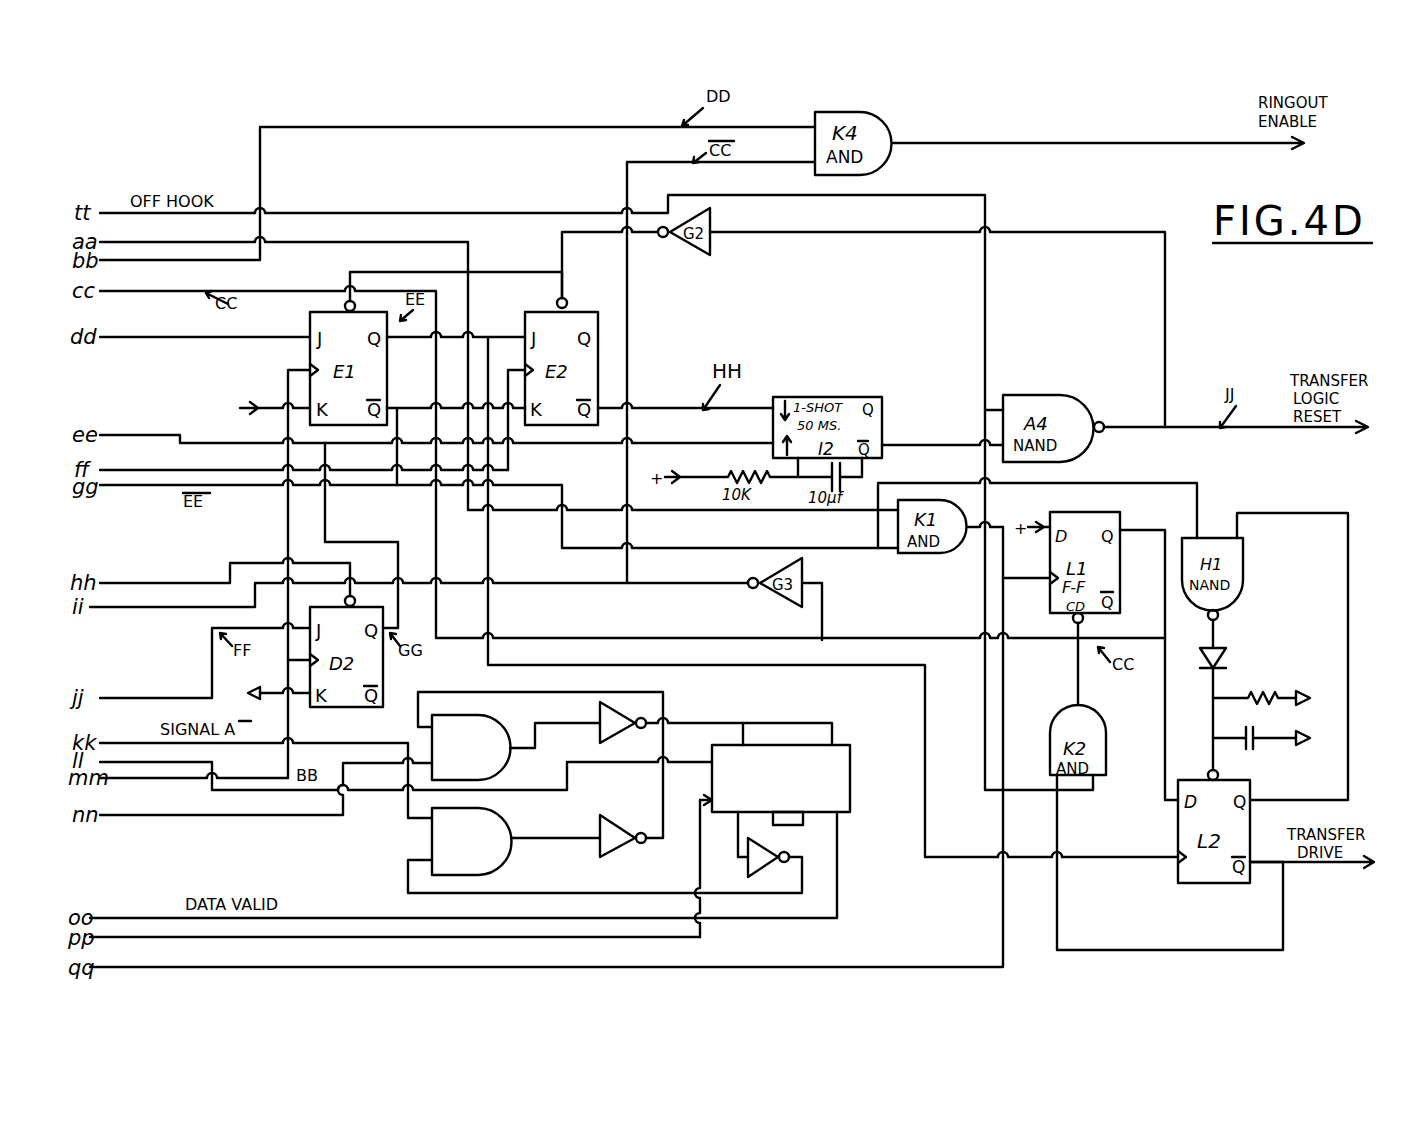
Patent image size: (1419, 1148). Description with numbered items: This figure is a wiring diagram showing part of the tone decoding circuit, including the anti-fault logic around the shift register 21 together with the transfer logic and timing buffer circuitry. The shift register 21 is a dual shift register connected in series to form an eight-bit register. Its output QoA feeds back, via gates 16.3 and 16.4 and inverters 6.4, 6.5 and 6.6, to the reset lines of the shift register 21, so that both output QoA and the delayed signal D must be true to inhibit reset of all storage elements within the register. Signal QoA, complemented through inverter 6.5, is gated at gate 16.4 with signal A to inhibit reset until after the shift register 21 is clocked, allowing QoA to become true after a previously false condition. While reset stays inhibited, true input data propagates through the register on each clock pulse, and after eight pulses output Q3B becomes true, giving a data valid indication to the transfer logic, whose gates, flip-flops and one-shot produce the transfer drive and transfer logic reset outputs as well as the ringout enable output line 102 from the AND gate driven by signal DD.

The ringout enable output line 102 is at (1057, 145).
The shift register 21 is at (772, 840).
The gate 16.3 is at (540, 765).
The gate 16.4 is at (605, 850).
The inverter 6.4 is at (623, 836).
The inverter 6.5 is at (763, 844).
The inverter 6.6 is at (716, 723).